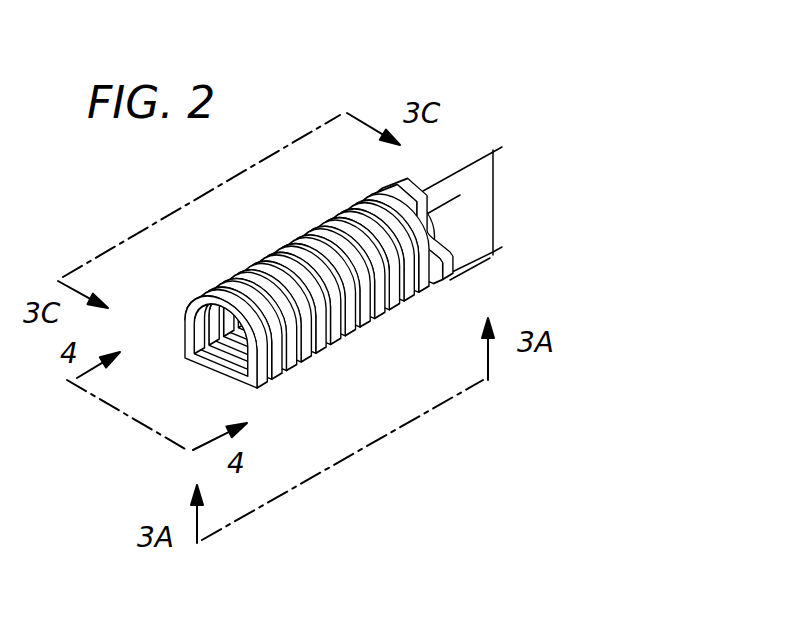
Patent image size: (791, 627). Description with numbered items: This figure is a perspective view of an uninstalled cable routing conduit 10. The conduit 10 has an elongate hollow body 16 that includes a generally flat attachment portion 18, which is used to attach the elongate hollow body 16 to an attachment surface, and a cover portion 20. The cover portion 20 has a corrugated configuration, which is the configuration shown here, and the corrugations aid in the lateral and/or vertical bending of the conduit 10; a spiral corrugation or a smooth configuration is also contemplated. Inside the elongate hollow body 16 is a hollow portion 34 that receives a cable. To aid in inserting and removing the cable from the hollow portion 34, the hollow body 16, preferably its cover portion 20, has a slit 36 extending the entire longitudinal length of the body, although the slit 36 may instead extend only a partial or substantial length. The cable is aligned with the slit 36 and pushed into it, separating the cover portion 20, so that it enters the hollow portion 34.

The conduit 10 is at (466, 120).
The elongate hollow body 16 is at (540, 230).
The attachment portion 18 is at (497, 250).
The cover portion 20 is at (493, 214).
The hollow portion 34 is at (212, 308).
The slit 36 is at (356, 213).